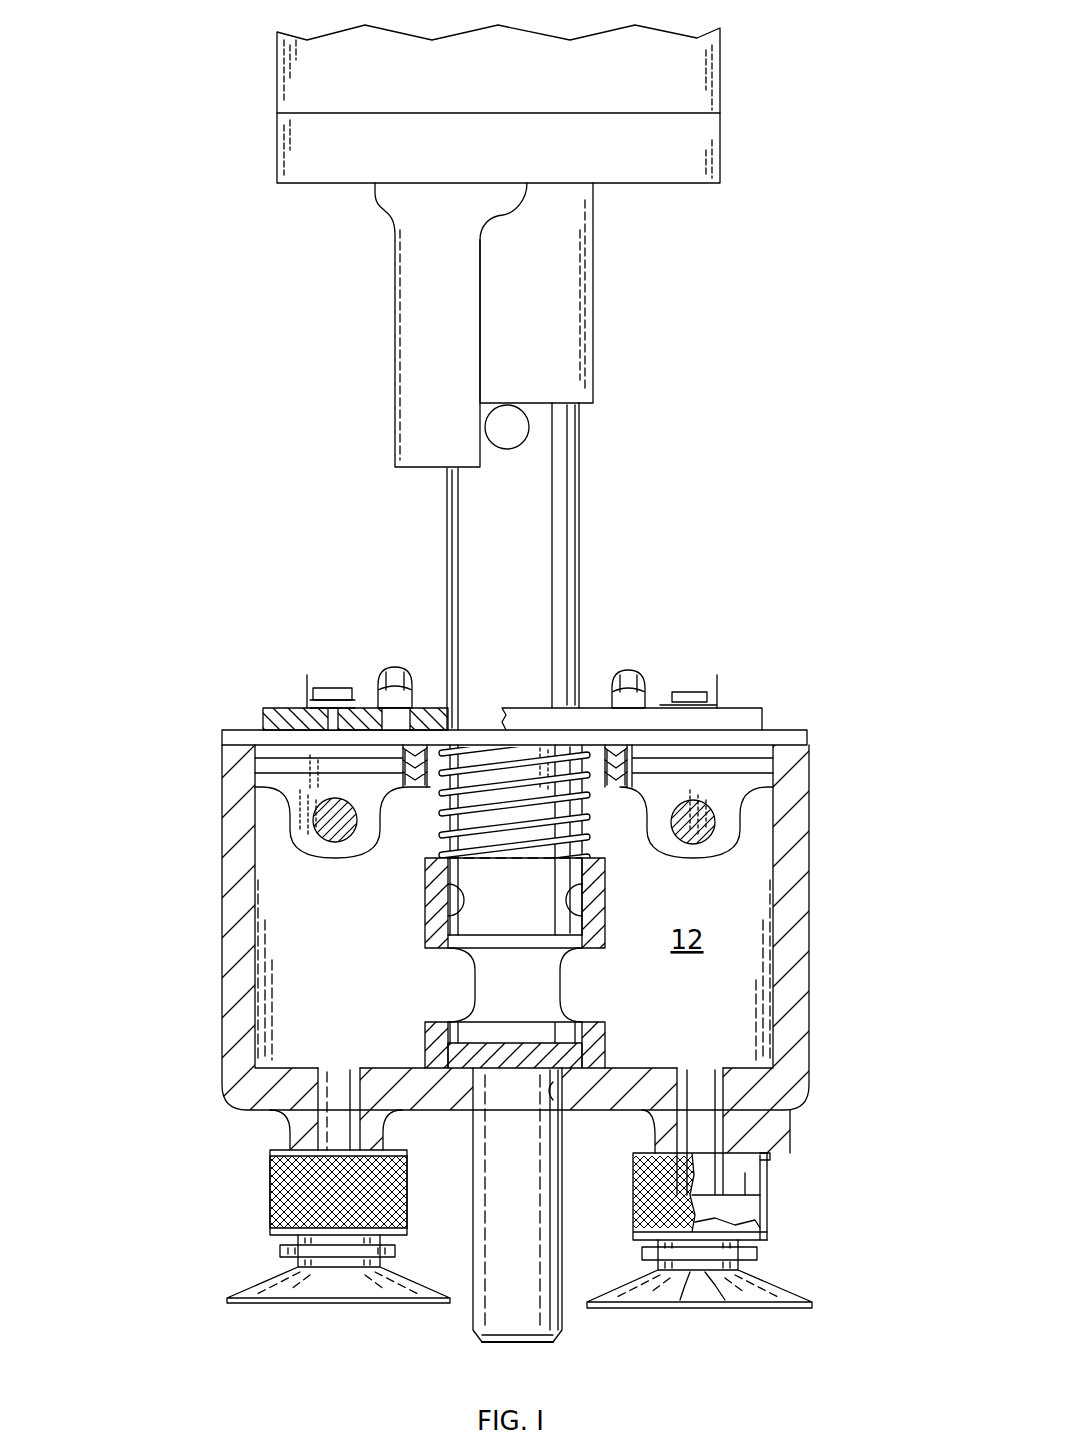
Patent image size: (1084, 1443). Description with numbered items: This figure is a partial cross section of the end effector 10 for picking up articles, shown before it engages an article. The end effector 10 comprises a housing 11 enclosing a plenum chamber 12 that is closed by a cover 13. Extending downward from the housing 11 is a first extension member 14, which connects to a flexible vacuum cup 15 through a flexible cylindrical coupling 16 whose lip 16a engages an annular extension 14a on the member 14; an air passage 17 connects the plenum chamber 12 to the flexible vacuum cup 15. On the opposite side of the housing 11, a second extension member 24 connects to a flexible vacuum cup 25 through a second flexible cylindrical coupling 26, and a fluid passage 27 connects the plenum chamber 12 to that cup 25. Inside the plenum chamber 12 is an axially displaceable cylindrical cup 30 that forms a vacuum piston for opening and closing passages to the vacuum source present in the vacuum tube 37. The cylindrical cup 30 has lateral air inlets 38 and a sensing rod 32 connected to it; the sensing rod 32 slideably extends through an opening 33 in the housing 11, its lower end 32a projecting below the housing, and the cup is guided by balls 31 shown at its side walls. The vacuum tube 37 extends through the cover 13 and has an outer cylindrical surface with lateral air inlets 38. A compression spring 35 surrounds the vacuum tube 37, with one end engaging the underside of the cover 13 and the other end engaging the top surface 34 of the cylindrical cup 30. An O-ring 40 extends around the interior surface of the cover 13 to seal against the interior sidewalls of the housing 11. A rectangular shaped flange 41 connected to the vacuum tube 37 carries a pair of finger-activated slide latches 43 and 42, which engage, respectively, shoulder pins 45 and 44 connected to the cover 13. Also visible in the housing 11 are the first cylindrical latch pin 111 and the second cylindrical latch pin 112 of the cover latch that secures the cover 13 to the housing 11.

The end effector 10 is at (203, 694).
The housing 11 is at (800, 938).
The plenum chamber 12 is at (686, 940).
The cover 13 is at (780, 740).
The first extension member 14 is at (733, 1140).
The annular extension 14a is at (745, 1173).
The flexible vacuum cup 15 is at (797, 1298).
The flexible cylindrical coupling 16 is at (767, 1192).
The lip 16a is at (758, 1150).
The air passage 17 is at (703, 1137).
The second extension member 24 is at (293, 1132).
The flexible vacuum cup 25 is at (245, 1290).
The second flexible cylindrical coupling 26 is at (270, 1193).
The fluid passage 27 is at (332, 1080).
The cylindrical cup 30 is at (602, 938).
The balls 31 is at (453, 910).
The sensing rod 32 is at (555, 1196).
The shaft end 32a is at (537, 1342).
The opening 33 is at (553, 1100).
The top surface 34 is at (438, 857).
The compression spring 35 is at (590, 808).
The vacuum tube 37 is at (557, 577).
The lateral air inlets 38 is at (455, 997).
The O-ring 40 is at (264, 770).
The rectangular shaped flange 41 is at (752, 718).
The finger-activated slide latch 42 is at (703, 675).
The finger-activated slide latch 43 is at (338, 682).
The shoulder pin 44 is at (390, 668).
The shoulder pin 45 is at (630, 670).
The first cylindrical latch pin 111 is at (702, 860).
The second cylindrical latch pin 112 is at (348, 853).